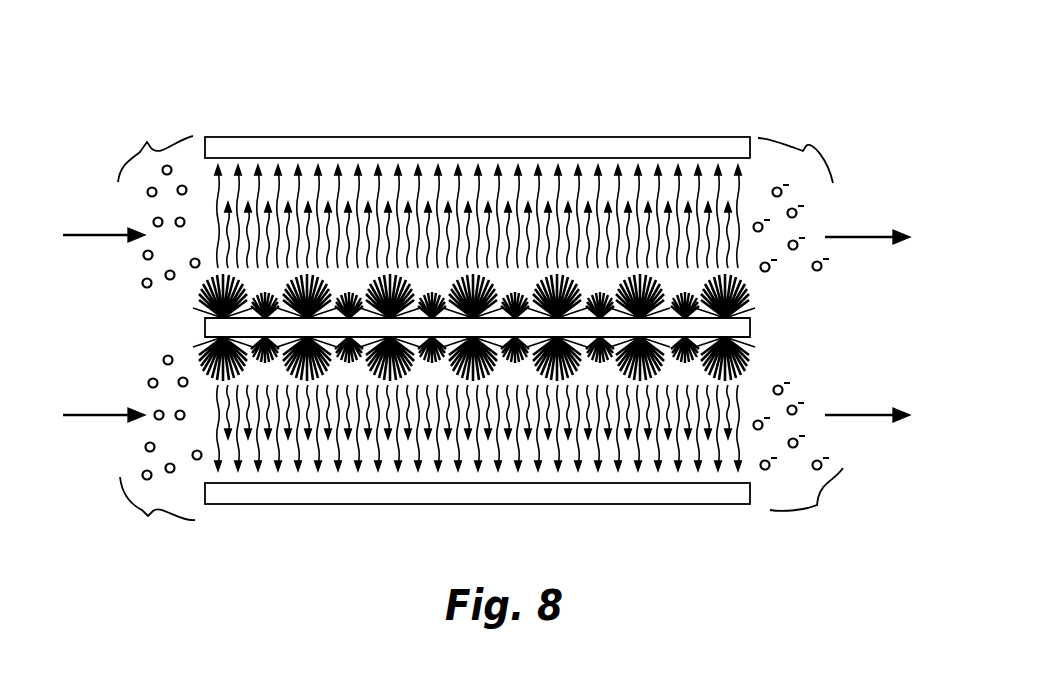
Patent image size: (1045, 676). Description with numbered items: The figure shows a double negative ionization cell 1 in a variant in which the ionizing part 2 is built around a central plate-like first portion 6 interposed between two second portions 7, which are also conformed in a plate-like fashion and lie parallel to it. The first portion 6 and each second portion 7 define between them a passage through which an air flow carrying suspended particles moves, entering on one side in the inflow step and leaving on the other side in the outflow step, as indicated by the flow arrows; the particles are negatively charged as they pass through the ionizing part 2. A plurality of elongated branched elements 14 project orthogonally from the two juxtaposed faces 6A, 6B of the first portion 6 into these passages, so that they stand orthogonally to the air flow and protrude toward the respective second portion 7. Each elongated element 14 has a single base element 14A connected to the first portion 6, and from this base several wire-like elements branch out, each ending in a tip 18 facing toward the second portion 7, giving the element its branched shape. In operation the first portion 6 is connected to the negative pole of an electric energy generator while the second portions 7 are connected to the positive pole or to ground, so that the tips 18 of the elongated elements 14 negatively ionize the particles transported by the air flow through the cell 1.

The ionization cell 1 is at (221, 90).
The ionizing part 2 is at (842, 92).
The first portion 6 is at (766, 324).
The juxtaposed face of the first portion 6A is at (747, 318).
The juxtaposed face of the first portion 6B is at (286, 338).
The second portion 7 is at (463, 130).
The elongated element 14 is at (503, 283).
The base element 14A is at (300, 318).
The tip 18 is at (557, 318).